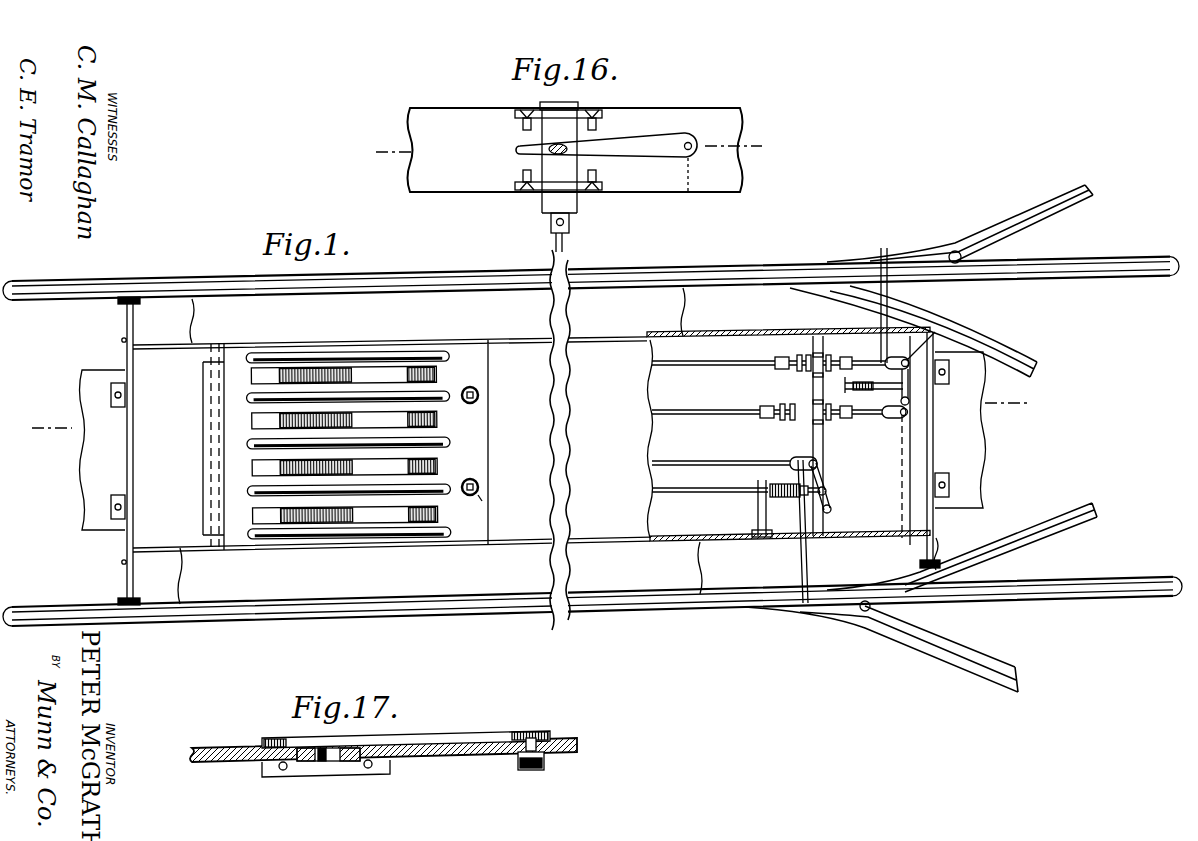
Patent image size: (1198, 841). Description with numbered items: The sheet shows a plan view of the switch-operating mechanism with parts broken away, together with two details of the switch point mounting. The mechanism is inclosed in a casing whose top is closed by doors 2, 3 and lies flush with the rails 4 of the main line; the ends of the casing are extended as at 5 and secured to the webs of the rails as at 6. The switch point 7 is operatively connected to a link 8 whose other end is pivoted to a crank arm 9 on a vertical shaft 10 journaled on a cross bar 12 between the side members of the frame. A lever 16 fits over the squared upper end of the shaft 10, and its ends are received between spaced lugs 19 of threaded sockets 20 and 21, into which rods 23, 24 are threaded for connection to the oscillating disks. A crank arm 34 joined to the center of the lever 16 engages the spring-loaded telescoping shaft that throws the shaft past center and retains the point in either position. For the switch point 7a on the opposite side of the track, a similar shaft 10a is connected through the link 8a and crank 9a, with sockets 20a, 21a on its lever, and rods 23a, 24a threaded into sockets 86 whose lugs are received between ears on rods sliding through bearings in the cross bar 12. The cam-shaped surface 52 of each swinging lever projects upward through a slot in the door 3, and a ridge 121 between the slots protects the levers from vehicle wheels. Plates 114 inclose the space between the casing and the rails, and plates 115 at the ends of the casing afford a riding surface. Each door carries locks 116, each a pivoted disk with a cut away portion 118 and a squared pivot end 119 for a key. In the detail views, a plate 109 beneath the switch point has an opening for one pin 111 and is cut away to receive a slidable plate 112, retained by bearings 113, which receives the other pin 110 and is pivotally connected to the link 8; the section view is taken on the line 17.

In FIG. 1, the door 2 is at (529, 416).
In FIG. 1, the door 3 is at (391, 444).
In FIG. 1, the rails 4 is at (684, 268).
In FIG. 1, the extended ends of casing 5 is at (140, 340).
In FIG. 1, the securing points 6 is at (140, 298).
In FIG. 1, the switch point 7 is at (700, 333).
In FIG. 1, the switch point 7a is at (910, 250).
In FIG. 16, the link 8 is at (564, 246).
In FIG. 1, the link 8 is at (800, 553).
In FIG. 1, the link 8a is at (893, 288).
In FIG. 1, the crank arm 9 is at (818, 436).
In FIG. 1, the crank 9a is at (858, 338).
In FIG. 1, the vertical shaft 10 is at (826, 481).
In FIG. 1, the shaft 10a is at (912, 399).
In FIG. 1, the cross bar 12 is at (912, 440).
In FIG. 1, the lever 16 is at (833, 502).
In FIG. 16, the section line 17 is at (574, 150).
In FIG. 1, the spaced lugs 19 is at (828, 458).
In FIG. 1, the threaded socket 20 is at (805, 458).
In FIG. 1, the threaded socket 20a is at (940, 334).
In FIG. 1, the threaded socket 21 is at (822, 541).
In FIG. 1, the threaded socket 21a is at (874, 410).
In FIG. 1, the rod 23 is at (735, 462).
In FIG. 1, the rod 23a is at (725, 358).
In FIG. 1, the rod 24 is at (736, 499).
In FIG. 1, the rod 24a is at (737, 408).
In FIG. 1, the crank arm 34 is at (772, 489).
In FIG. 1, the cam-shaped surface 52 is at (404, 365).
In FIG. 1, the sockets 86 is at (782, 356).
In FIG. 16, the plate 109 is at (680, 110).
In FIG. 17, the plate 109 is at (570, 742).
In FIG. 16, the pin 110 is at (553, 160).
In FIG. 17, the pin 110 is at (326, 763).
In FIG. 16, the pin 111 is at (691, 160).
In FIG. 17, the pin 111 is at (548, 757).
In FIG. 16, the slidable plate 112 is at (550, 127).
In FIG. 16, the bearings 113 is at (580, 195).
In FIG. 1, the plates 114 is at (350, 448).
In FIG. 1, the plates 115 is at (985, 470).
In FIG. 1, the locks 116 is at (480, 394).
In FIG. 16, the cut away portion 118 is at (582, 107).
In FIG. 1, the cut away portion 118 is at (90, 460).
In FIG. 17, the cut away portion 118 is at (310, 762).
In FIG. 1, the squared portion 119 is at (483, 500).
In FIG. 1, the ridge 121 is at (245, 397).